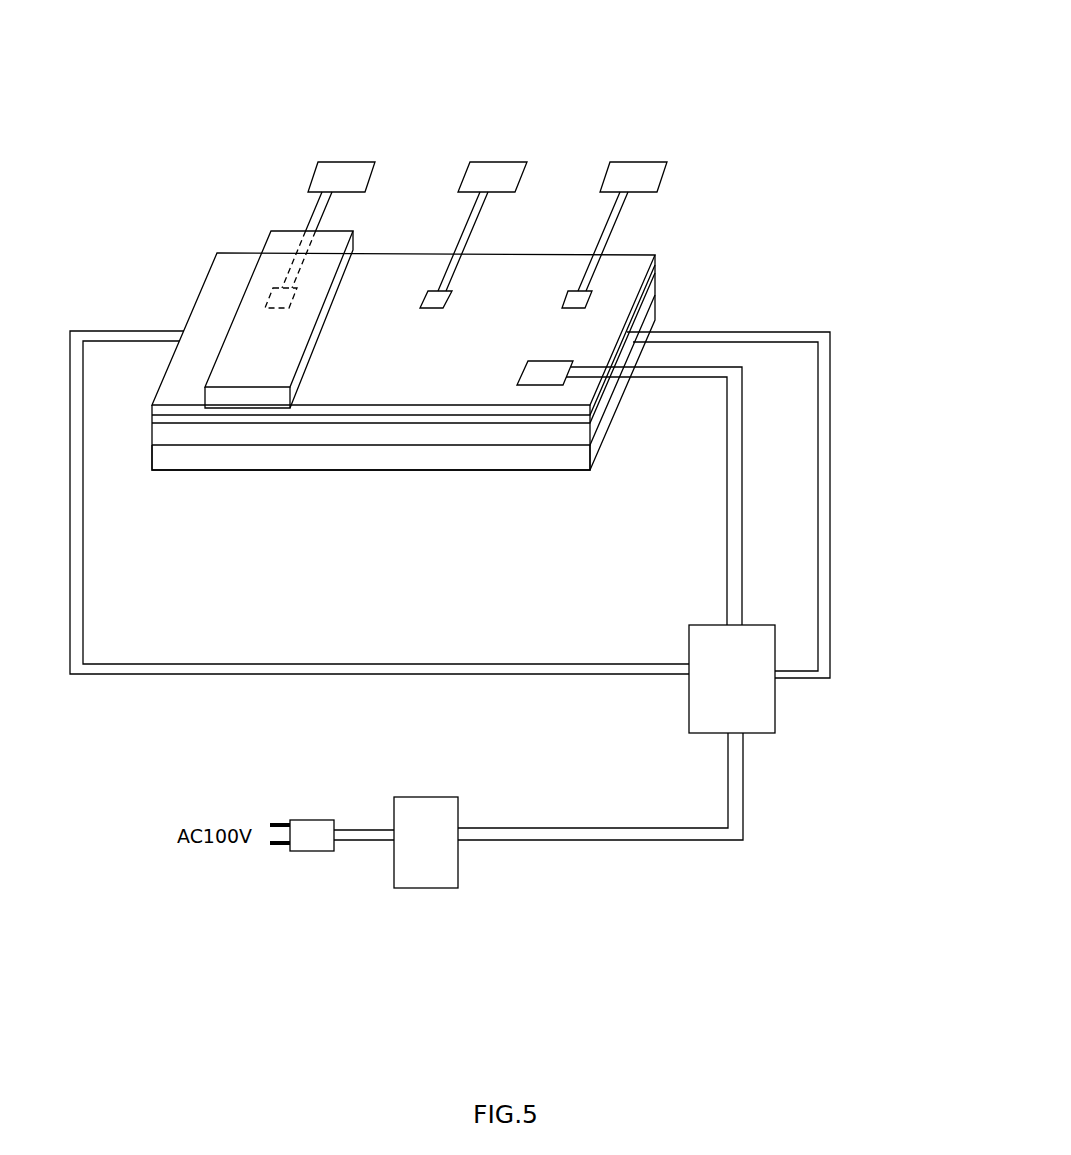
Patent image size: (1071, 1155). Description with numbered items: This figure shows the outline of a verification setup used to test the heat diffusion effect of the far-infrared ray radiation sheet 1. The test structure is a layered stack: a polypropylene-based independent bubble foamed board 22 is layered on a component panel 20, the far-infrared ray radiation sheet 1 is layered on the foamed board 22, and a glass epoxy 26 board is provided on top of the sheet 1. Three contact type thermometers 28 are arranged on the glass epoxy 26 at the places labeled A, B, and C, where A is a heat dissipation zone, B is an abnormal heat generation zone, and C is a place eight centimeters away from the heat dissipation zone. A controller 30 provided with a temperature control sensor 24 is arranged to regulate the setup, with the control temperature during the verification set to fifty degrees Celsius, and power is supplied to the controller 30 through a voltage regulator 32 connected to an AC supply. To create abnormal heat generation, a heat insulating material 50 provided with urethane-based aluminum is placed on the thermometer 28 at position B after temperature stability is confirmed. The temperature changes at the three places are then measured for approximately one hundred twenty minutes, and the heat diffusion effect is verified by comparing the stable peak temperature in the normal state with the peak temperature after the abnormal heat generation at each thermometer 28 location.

The far-infrared ray radiation sheet 1 is at (535, 418).
The component panel 20 is at (280, 457).
The polypropylene-based independent bubble foamed board 22 is at (215, 438).
The temperature control sensor 24 is at (543, 373).
The glass epoxy 26 is at (487, 395).
The contact type thermometer 28 is at (612, 165).
The controller 30 is at (758, 707).
The voltage regulator 32 is at (433, 858).
The heat insulating material 50 is at (269, 260).